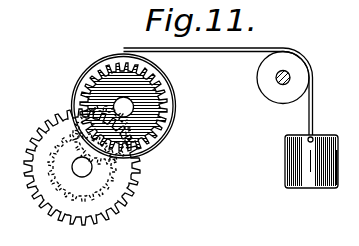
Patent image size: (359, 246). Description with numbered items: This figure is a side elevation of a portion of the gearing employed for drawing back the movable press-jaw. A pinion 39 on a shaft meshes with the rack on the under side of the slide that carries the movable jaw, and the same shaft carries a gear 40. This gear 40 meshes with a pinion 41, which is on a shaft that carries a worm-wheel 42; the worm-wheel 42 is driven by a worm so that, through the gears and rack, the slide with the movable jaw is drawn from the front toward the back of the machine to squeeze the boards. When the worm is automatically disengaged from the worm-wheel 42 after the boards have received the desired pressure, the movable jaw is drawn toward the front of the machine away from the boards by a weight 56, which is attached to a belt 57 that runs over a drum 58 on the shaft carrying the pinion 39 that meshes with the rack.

The pinion 39 is at (150, 98).
The gear 40 is at (162, 122).
The pinion 41 is at (105, 175).
The worm-wheel 42 is at (112, 204).
The weight 56 is at (323, 190).
The belt 57 is at (275, 50).
The drum 58 is at (102, 58).